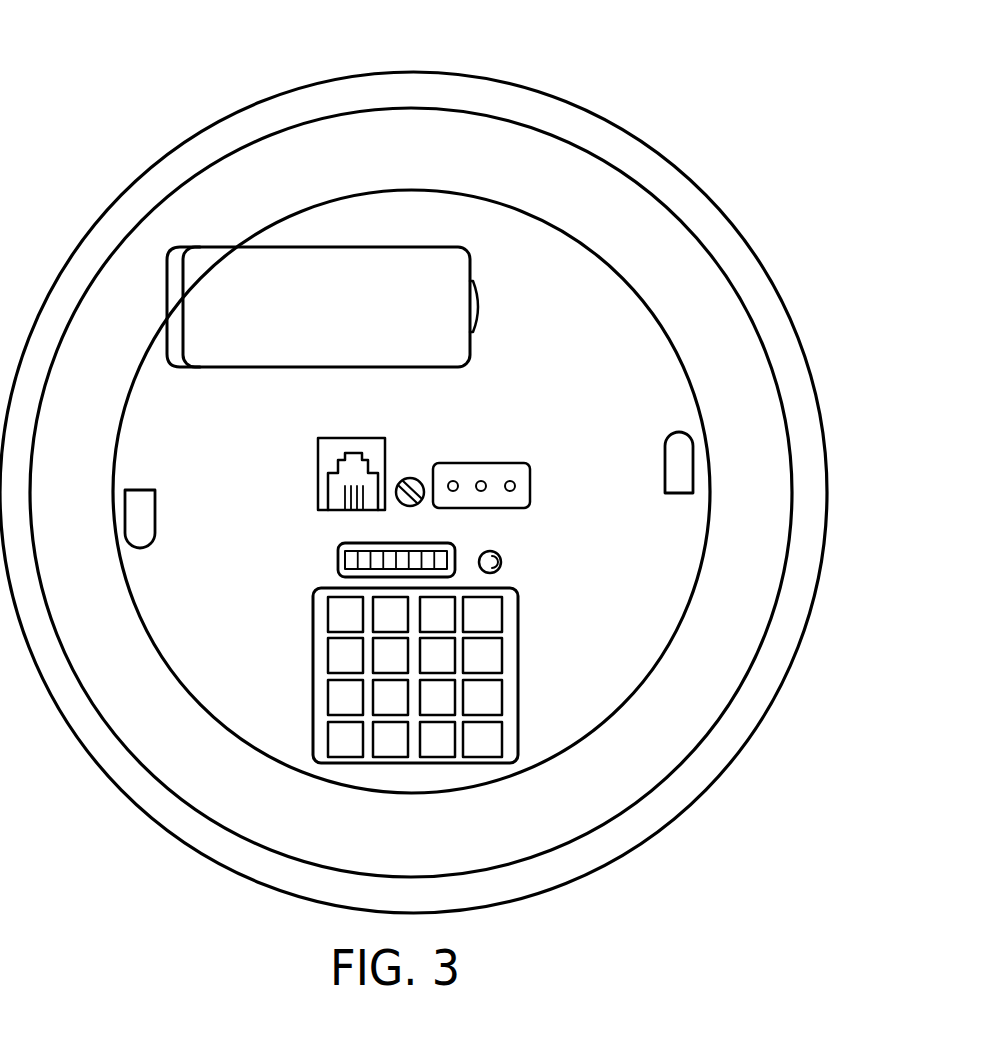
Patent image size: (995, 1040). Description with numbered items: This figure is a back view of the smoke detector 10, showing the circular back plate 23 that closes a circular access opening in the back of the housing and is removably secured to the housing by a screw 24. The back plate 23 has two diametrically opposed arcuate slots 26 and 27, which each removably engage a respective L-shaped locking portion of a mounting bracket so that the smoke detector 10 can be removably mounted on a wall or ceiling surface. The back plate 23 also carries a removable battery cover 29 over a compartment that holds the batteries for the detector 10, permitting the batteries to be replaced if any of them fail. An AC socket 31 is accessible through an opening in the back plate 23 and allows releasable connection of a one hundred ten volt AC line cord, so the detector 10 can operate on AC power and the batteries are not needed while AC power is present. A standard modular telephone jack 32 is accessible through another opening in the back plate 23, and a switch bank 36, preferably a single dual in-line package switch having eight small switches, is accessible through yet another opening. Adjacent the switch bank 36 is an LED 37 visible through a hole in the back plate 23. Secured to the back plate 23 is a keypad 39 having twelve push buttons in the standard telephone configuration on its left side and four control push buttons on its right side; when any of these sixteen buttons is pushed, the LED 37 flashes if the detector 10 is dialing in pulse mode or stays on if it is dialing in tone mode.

The smoke detector 10 is at (661, 100).
The back plate 23 is at (627, 335).
The battery cover 29 is at (273, 275).
The modular telephone jack 32 is at (318, 465).
The screw 24 is at (413, 479).
The AC socket 31 is at (498, 473).
The arcuate slot 27 is at (672, 469).
The arcuate slot 26 is at (146, 513).
The switch bank 36 is at (345, 556).
The LED 37 is at (496, 555).
The keypad 39 is at (518, 658).